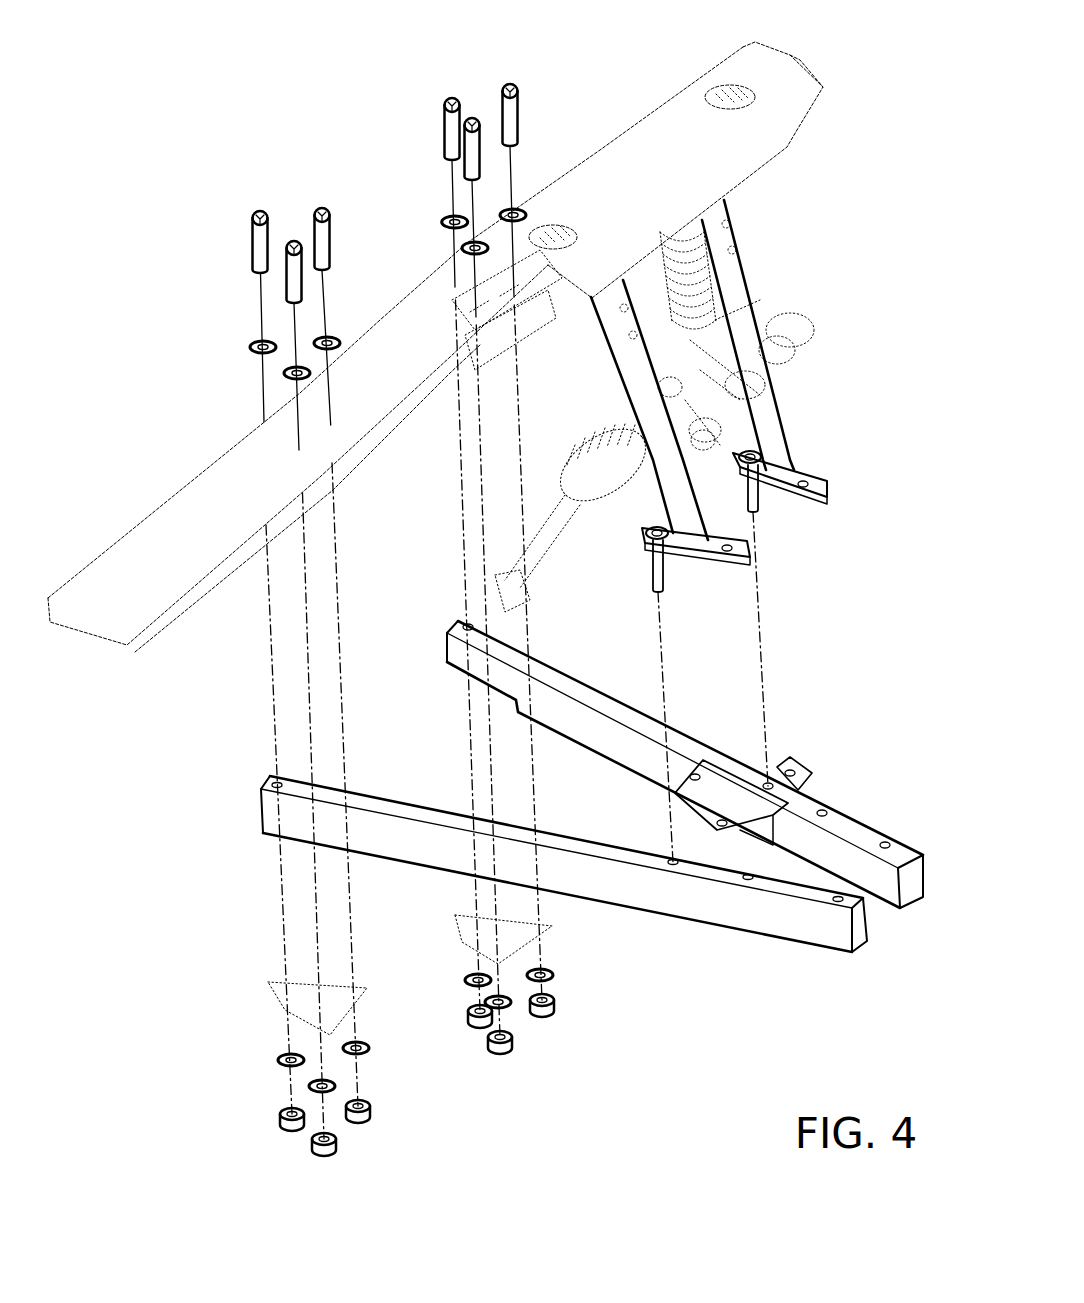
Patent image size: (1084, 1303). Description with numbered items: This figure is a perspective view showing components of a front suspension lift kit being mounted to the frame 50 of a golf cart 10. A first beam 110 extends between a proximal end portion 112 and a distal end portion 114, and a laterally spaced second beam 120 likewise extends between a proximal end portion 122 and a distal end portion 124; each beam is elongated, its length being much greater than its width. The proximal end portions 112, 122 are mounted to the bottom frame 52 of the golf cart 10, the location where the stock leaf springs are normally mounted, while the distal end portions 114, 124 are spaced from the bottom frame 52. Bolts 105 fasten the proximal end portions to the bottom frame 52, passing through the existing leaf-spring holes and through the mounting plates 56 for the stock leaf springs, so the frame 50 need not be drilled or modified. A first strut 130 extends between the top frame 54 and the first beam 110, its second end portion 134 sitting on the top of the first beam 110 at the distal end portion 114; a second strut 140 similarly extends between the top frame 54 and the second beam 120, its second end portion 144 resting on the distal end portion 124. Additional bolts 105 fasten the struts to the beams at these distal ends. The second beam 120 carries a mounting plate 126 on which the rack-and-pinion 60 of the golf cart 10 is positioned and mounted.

The golf cart 10 is at (558, 285).
The frame 50 is at (605, 163).
The bottom frame 52 is at (132, 555).
The top frame 54 is at (803, 72).
The mounting plates 56 is at (293, 1003).
The rack-and-pinion 60 is at (620, 447).
The bolts 105 is at (450, 134).
The first beam 110 is at (534, 905).
The proximal end portion 112 is at (252, 847).
The distal end portion 114 is at (837, 969).
The second beam 120 is at (658, 759).
The proximal end portion 122 is at (436, 686).
The distal end portion 124 is at (906, 821).
The mounting plate 126 is at (711, 793).
The first strut 130 is at (673, 489).
The second end portion 134 is at (712, 580).
The second strut 140 is at (740, 293).
The second end portion 144 is at (823, 453).